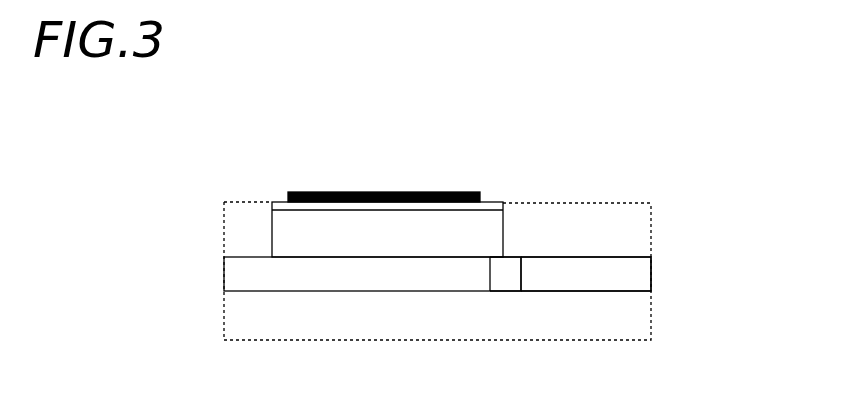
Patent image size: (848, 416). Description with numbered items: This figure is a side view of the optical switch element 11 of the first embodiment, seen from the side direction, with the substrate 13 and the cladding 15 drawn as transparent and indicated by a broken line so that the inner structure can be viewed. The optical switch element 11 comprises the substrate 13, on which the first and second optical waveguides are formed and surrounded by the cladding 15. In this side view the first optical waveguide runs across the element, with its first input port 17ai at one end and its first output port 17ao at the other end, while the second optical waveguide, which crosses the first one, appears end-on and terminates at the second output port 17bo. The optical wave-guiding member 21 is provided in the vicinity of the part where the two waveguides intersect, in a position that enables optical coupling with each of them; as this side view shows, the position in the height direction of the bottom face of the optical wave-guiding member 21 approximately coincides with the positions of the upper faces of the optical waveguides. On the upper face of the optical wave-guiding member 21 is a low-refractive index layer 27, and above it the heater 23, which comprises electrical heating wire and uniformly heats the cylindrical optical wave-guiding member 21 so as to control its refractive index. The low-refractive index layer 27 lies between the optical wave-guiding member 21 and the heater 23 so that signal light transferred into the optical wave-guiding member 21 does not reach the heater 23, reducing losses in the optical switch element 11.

The optical switch element 11 is at (683, 159).
The substrate 13 is at (632, 315).
The cladding 15 is at (630, 222).
The first input port 17ai is at (221, 271).
The first output port 17ao is at (655, 275).
The second output port 17bo is at (505, 280).
The optical wave-guiding member 21 is at (276, 235).
The heater 23 is at (351, 192).
The low-refractive index layer 27 is at (275, 210).